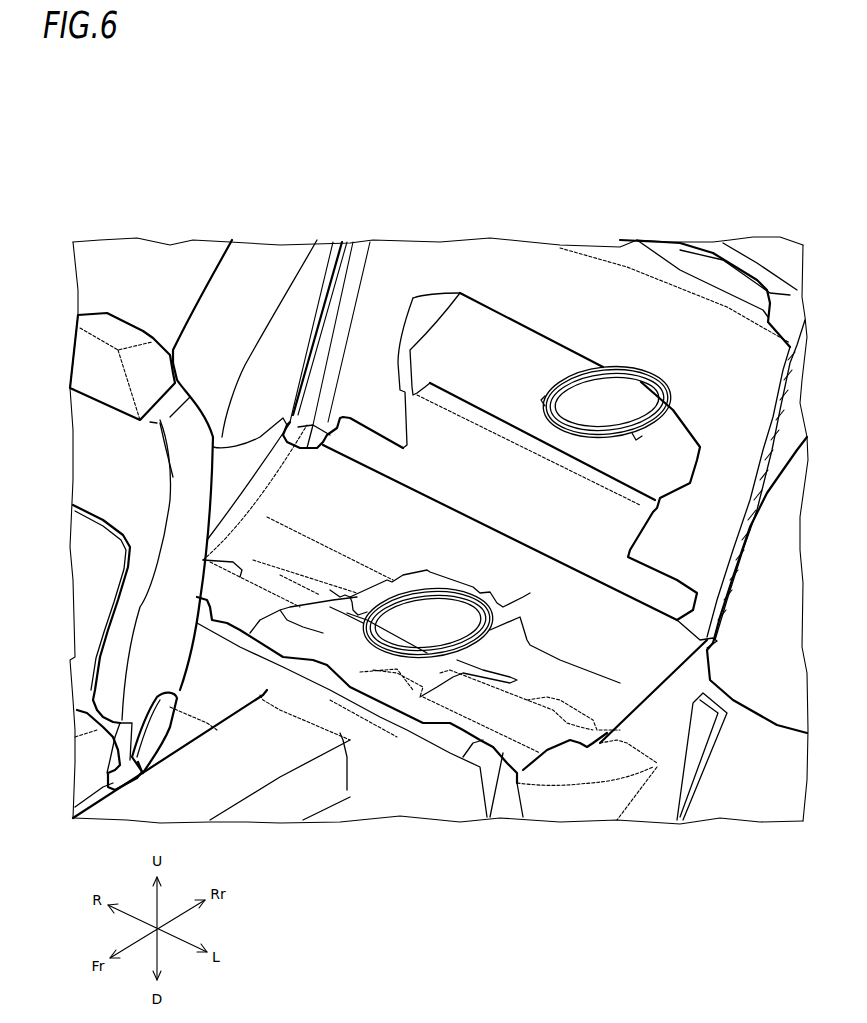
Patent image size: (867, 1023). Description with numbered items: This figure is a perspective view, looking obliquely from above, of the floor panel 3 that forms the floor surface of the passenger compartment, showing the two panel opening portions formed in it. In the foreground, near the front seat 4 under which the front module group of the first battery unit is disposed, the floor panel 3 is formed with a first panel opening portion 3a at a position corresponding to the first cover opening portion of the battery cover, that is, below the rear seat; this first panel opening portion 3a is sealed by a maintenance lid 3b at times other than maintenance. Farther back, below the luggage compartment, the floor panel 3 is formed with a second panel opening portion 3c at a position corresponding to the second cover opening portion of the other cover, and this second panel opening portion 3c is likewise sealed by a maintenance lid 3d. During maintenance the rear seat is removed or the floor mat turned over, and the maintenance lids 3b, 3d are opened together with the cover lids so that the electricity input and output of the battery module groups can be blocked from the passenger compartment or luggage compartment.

The floor panel 3 is at (480, 363).
The first panel opening portion 3a is at (497, 607).
The maintenance lid 3b is at (433, 620).
The second panel opening portion 3c is at (583, 390).
The maintenance lid 3d is at (617, 403).
The front seat 4 is at (130, 467).